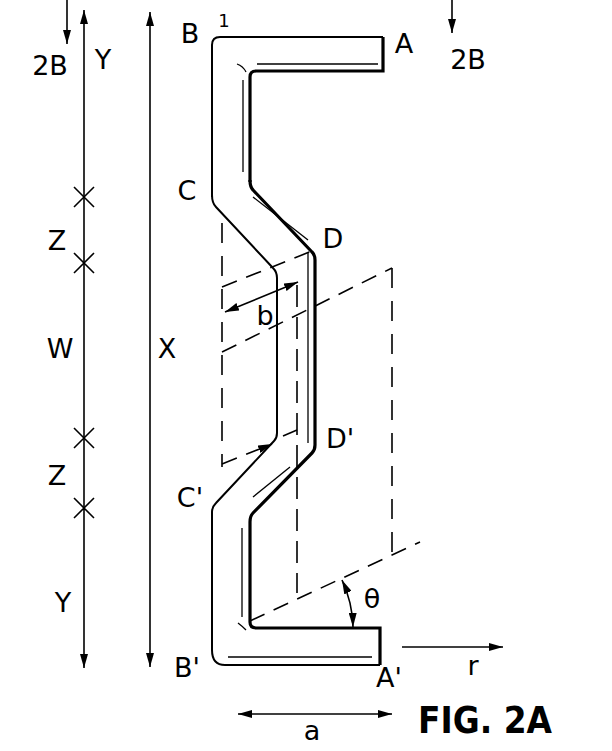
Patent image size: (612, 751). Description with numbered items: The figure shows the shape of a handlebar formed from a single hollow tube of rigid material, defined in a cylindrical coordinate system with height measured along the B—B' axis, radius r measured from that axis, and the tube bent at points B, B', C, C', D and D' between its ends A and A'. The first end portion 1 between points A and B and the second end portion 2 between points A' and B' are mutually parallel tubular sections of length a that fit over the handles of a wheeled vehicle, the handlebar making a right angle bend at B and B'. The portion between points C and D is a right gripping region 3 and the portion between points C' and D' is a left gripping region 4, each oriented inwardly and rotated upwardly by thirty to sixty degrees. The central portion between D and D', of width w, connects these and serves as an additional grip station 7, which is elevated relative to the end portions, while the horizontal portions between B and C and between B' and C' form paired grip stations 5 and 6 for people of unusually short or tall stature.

The first end portion 1 is at (353, 37).
The second end portion 2 is at (340, 666).
The right gripping region 3 is at (281, 212).
The left gripping region 4 is at (274, 491).
The grip station 5 is at (212, 94).
The grip station 6 is at (212, 547).
The additional grip station 7 is at (317, 334).